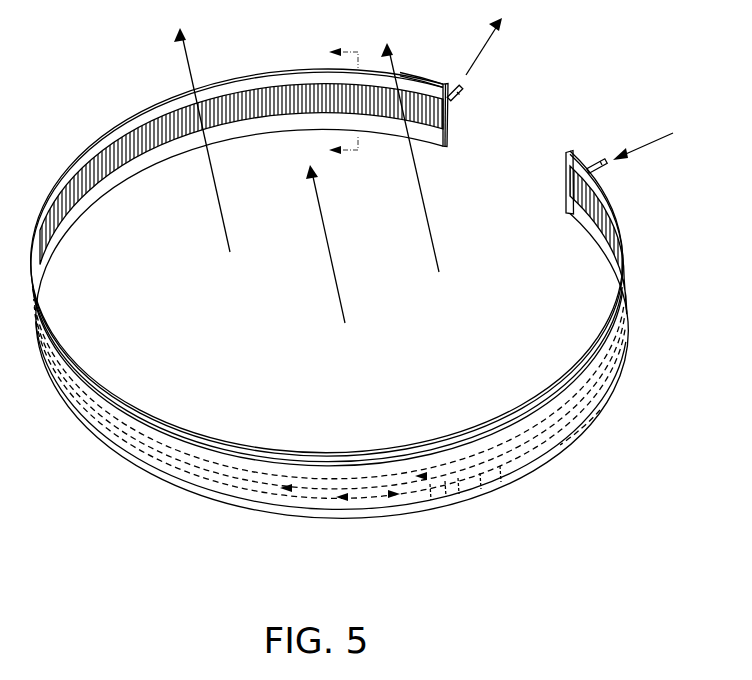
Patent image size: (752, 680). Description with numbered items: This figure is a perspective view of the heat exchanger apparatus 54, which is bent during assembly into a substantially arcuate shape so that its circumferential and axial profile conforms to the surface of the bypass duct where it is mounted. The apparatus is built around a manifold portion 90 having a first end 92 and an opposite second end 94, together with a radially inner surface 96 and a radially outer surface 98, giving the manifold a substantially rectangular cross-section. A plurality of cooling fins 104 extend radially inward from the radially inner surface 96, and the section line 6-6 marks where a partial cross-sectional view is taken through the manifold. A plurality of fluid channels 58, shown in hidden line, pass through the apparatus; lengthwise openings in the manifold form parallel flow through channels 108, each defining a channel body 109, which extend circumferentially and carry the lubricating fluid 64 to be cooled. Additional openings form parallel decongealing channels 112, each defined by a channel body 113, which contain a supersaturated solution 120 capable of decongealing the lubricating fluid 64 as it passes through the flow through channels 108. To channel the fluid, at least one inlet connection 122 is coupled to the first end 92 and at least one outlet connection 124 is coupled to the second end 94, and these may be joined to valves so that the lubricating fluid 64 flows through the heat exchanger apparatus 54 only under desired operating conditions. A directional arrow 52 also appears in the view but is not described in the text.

The line 6- 6 is at (336, 100).
The axis direction arrow 52 is at (337, 292).
The heat exchanger apparatus 54 is at (592, 98).
The fluid channels 58 is at (458, 490).
The lubricating fluid 64 is at (449, 473).
The manifold portion 90 is at (563, 195).
The first end 92 is at (450, 117).
The second end 94 is at (562, 182).
The radially inner surface 96 is at (444, 132).
The radially outer surface 98 is at (530, 480).
The cooling fins 104 is at (252, 122).
The flow through channels 108 is at (305, 517).
The channel body 109 is at (318, 517).
The decongealing channels 112 is at (197, 500).
The channel body 113 is at (213, 500).
The supersaturated solution 120 is at (330, 457).
The inlet connection 122 is at (463, 90).
The outlet connection 124 is at (610, 168).